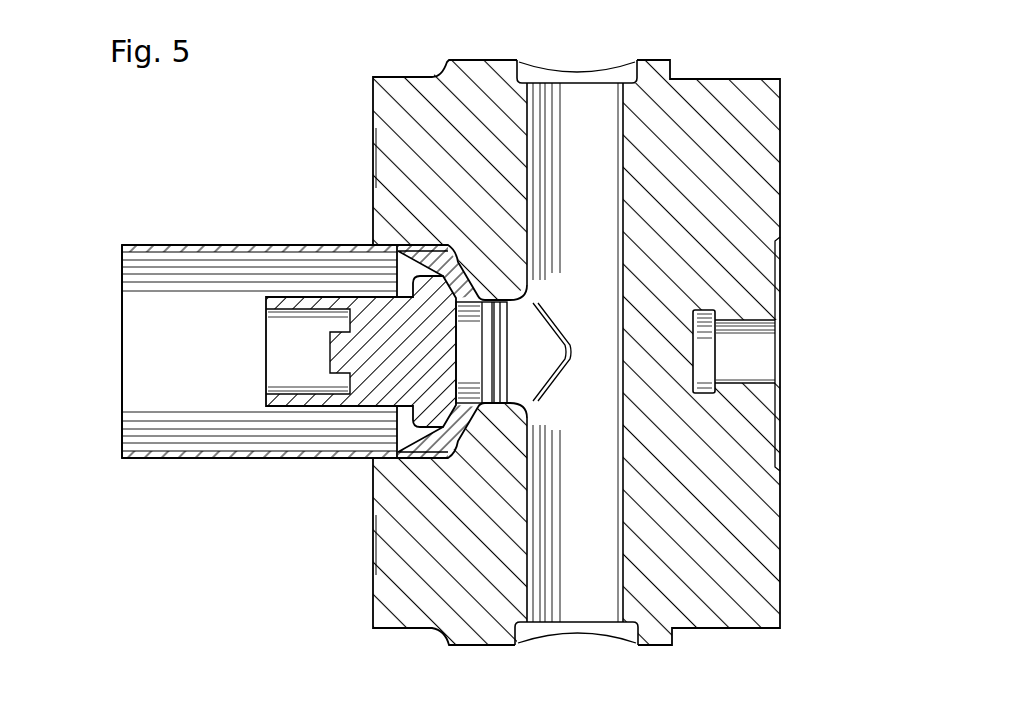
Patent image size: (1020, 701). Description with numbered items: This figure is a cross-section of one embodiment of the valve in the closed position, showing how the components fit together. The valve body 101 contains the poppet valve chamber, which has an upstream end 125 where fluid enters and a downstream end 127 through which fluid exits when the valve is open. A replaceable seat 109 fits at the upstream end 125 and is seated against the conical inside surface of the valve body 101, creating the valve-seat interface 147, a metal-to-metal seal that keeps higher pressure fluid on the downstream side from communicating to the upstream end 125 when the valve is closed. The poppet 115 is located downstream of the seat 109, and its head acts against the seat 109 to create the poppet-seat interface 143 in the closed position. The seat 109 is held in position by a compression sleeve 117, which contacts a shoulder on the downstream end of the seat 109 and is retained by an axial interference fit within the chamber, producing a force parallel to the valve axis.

The valve body 101 is at (718, 79).
The seat 109 is at (430, 248).
The poppet 115 is at (367, 409).
The compression sleeve 117 is at (191, 233).
The upstream end 125 is at (502, 338).
The downstream end 127 is at (120, 330).
The poppet-seat interface 143 is at (459, 291).
The valve-seat interface 147 is at (458, 441).